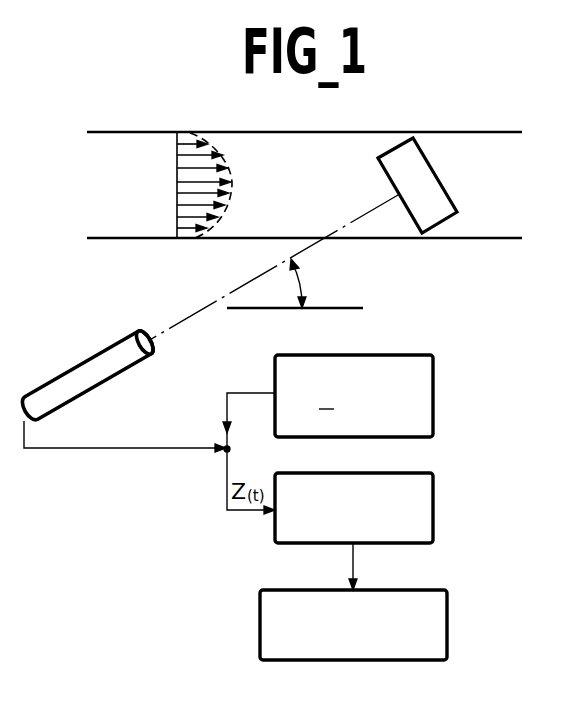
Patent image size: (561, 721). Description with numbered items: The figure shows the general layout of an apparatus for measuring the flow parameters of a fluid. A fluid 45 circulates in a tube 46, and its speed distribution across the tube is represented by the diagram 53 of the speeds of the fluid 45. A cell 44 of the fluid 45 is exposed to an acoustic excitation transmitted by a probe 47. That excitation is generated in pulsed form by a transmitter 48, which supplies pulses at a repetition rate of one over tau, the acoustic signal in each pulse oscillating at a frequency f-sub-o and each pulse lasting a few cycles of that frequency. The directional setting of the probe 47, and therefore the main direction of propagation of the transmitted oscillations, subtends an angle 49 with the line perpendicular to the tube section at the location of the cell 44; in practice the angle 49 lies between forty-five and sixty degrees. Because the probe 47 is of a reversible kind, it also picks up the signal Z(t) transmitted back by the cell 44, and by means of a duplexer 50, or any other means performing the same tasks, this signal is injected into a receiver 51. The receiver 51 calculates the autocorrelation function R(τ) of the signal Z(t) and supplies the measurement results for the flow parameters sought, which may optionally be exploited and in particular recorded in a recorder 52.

The cell 44 is at (430, 161).
The fluid 45 is at (120, 147).
The tube 46 is at (312, 132).
The probe 47 is at (48, 393).
The transmitter 48 is at (437, 391).
The angle 49 is at (302, 283).
The duplexer 50 is at (224, 453).
The receiver 51 is at (436, 500).
The recorder 52 is at (449, 624).
The diagram of the speeds 53 is at (208, 144).